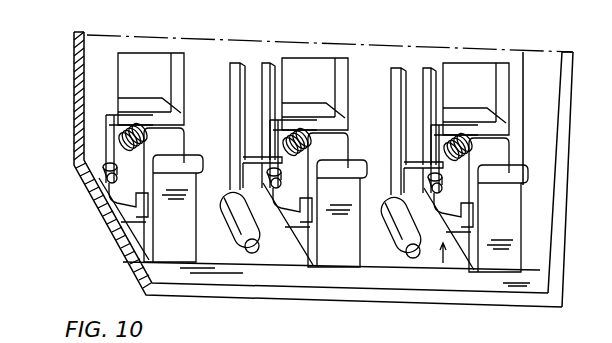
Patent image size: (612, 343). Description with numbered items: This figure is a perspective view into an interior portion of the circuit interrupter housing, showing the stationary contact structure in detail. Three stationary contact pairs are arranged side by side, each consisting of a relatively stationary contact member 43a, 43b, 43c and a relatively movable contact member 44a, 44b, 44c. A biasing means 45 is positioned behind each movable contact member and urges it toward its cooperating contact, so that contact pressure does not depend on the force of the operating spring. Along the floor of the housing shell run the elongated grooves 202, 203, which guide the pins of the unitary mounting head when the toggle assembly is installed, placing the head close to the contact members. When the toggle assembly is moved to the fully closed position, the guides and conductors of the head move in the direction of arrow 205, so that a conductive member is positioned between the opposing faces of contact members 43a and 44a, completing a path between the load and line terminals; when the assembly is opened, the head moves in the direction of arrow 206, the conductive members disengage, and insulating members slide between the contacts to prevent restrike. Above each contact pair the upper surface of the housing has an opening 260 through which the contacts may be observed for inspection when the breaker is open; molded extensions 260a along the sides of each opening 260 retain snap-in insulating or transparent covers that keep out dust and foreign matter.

The elongated groove 202 is at (424, 112).
The elongated groove 203 is at (254, 72).
The arrow 205 is at (419, 264).
The arrow 206 is at (461, 237).
The opening 260 is at (321, 92).
The molded extension 260a is at (498, 99).
The biasing means 45 is at (93, 137).
The contact member 44a is at (490, 179).
The contact member 44b is at (338, 153).
The contact member 44c is at (160, 171).
The contact member 43a is at (506, 218).
The contact member 43b is at (345, 258).
The contact member 43c is at (182, 208).